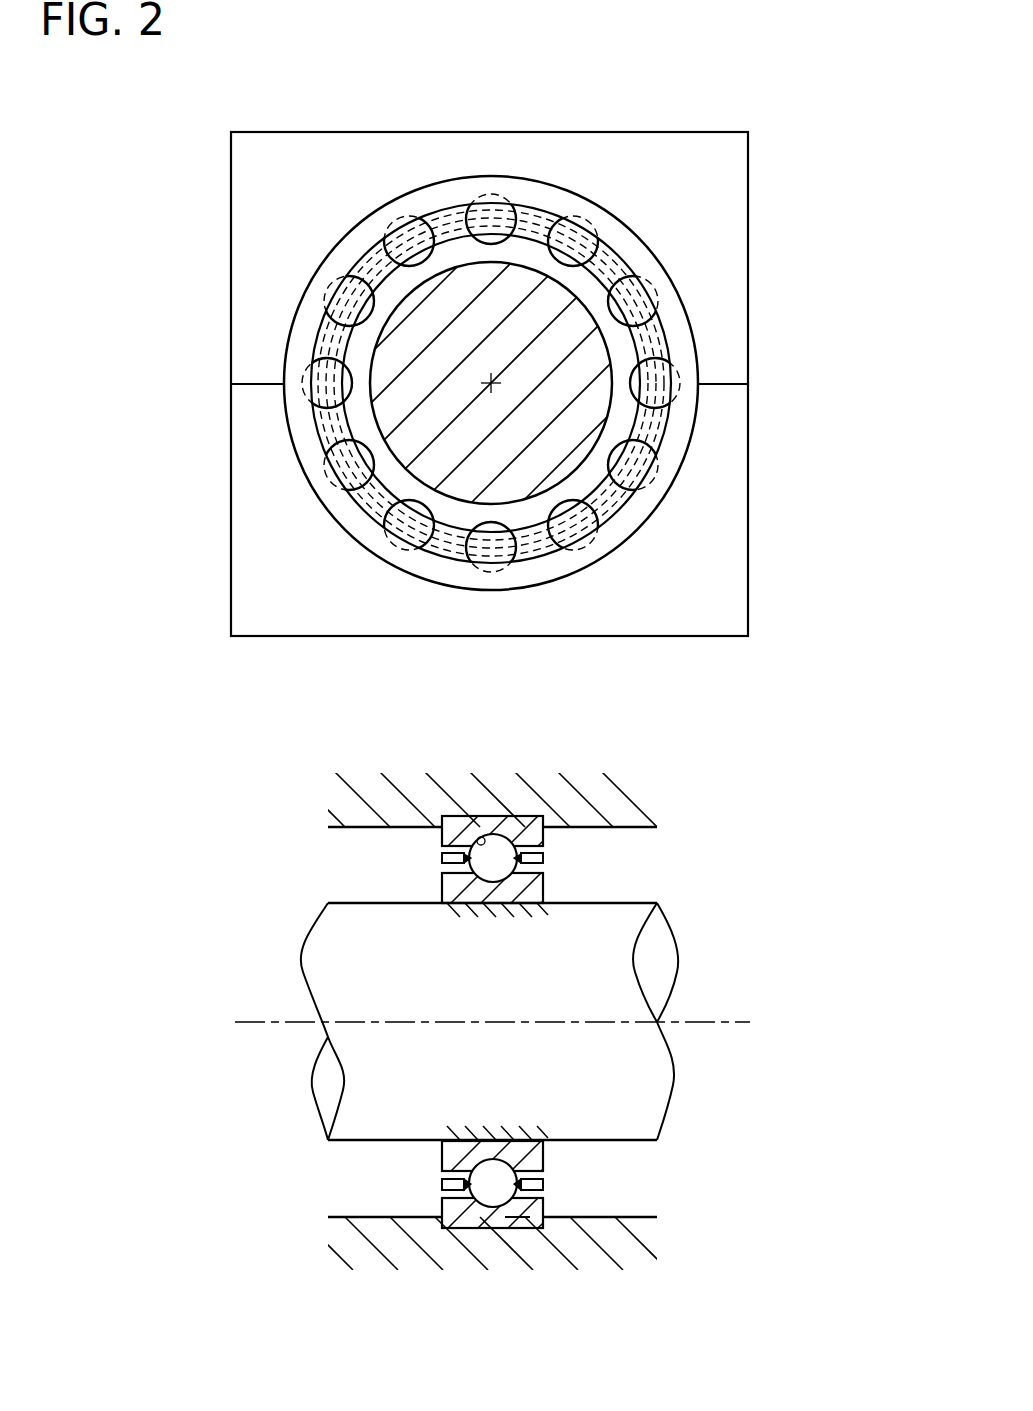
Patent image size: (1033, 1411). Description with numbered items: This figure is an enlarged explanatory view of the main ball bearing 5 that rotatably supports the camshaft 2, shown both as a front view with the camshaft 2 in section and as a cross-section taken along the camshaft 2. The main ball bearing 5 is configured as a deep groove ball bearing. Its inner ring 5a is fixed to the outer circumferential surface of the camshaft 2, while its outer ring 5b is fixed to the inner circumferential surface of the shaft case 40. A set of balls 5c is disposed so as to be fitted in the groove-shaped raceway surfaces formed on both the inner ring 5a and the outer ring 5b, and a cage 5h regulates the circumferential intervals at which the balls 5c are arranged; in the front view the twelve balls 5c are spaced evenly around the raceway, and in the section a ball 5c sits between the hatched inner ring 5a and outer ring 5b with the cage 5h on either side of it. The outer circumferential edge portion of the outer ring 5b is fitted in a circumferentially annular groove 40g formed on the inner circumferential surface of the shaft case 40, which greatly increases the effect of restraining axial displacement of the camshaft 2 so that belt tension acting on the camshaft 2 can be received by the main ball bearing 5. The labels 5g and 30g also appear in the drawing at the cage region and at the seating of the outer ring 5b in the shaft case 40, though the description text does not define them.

The camshaft 2 is at (440, 458).
The main ball bearing 5 is at (665, 243).
The inner ring 5a is at (587, 478).
The outer ring 5b is at (657, 478).
The balls 5c is at (667, 373).
The retainer 5g is at (478, 838).
The cage 5h is at (655, 432).
The shaft case 40 is at (698, 178).
The circumferentially annular groove 40g is at (458, 1229).
The outer ring fitting surface 30g is at (516, 1217).